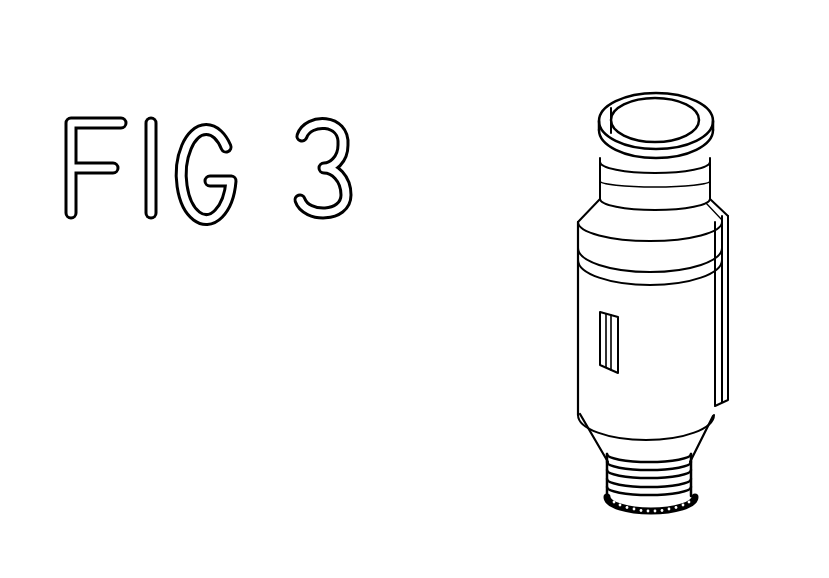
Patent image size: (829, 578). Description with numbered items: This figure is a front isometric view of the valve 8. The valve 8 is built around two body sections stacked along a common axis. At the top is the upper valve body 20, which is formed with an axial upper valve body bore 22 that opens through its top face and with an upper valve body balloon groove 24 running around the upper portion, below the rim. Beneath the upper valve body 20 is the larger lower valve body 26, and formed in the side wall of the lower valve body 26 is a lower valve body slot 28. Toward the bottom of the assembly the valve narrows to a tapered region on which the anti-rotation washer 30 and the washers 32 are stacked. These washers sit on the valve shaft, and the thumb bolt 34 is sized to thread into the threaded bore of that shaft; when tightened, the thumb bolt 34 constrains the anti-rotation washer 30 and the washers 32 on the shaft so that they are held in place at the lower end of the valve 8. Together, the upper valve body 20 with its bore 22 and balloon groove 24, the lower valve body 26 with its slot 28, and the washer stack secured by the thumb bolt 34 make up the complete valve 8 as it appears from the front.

The valve 8 is at (478, 132).
The upper valve body 20 is at (584, 216).
The upper valve body bore 22 is at (650, 115).
The upper valve body balloon groove 24 is at (601, 165).
The lower valve body 26 is at (578, 297).
The lower valve body slot 28 is at (600, 340).
The anti-rotation washer 30 is at (608, 464).
The washers 32 is at (608, 483).
The thumb bolt 34 is at (617, 505).